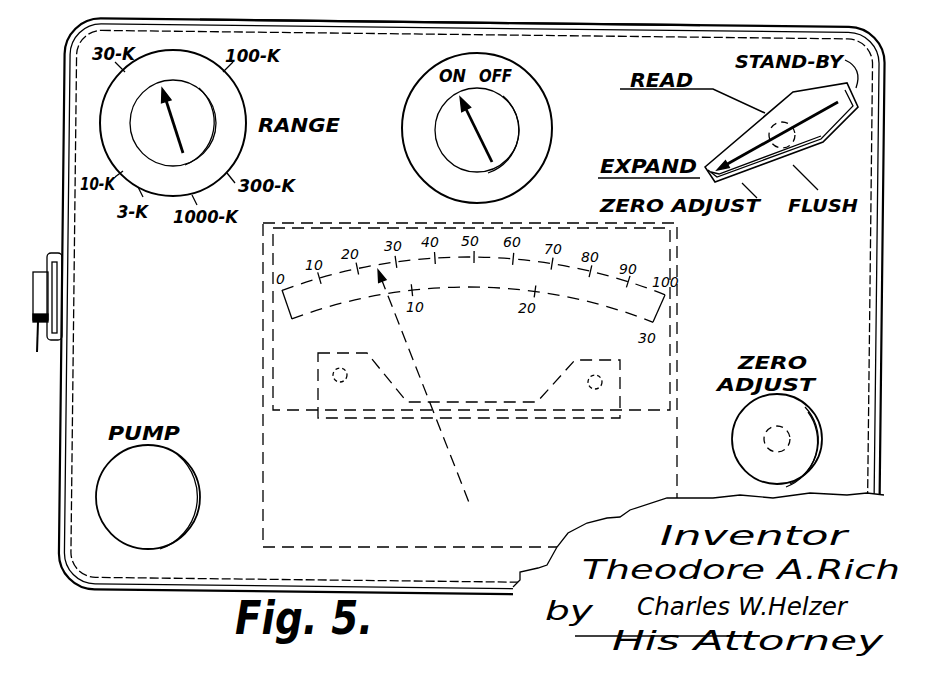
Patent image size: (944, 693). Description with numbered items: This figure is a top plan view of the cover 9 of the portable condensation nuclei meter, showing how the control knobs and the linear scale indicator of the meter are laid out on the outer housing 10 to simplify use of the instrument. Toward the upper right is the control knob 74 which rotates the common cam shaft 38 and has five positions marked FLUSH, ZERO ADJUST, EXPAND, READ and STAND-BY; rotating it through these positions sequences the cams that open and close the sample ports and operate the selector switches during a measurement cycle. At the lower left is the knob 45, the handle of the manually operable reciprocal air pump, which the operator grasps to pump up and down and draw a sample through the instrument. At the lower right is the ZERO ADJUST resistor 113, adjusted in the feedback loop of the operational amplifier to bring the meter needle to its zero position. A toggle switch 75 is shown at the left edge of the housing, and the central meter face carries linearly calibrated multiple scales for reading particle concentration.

The cover 9 is at (362, 68).
The housing 10 is at (72, 438).
The common cam shaft 38 is at (772, 132).
The knob 45 is at (168, 488).
The control knob 74 is at (778, 105).
The toggle switch 75 is at (47, 317).
The ZERO ADJUST resistor 113 is at (797, 431).